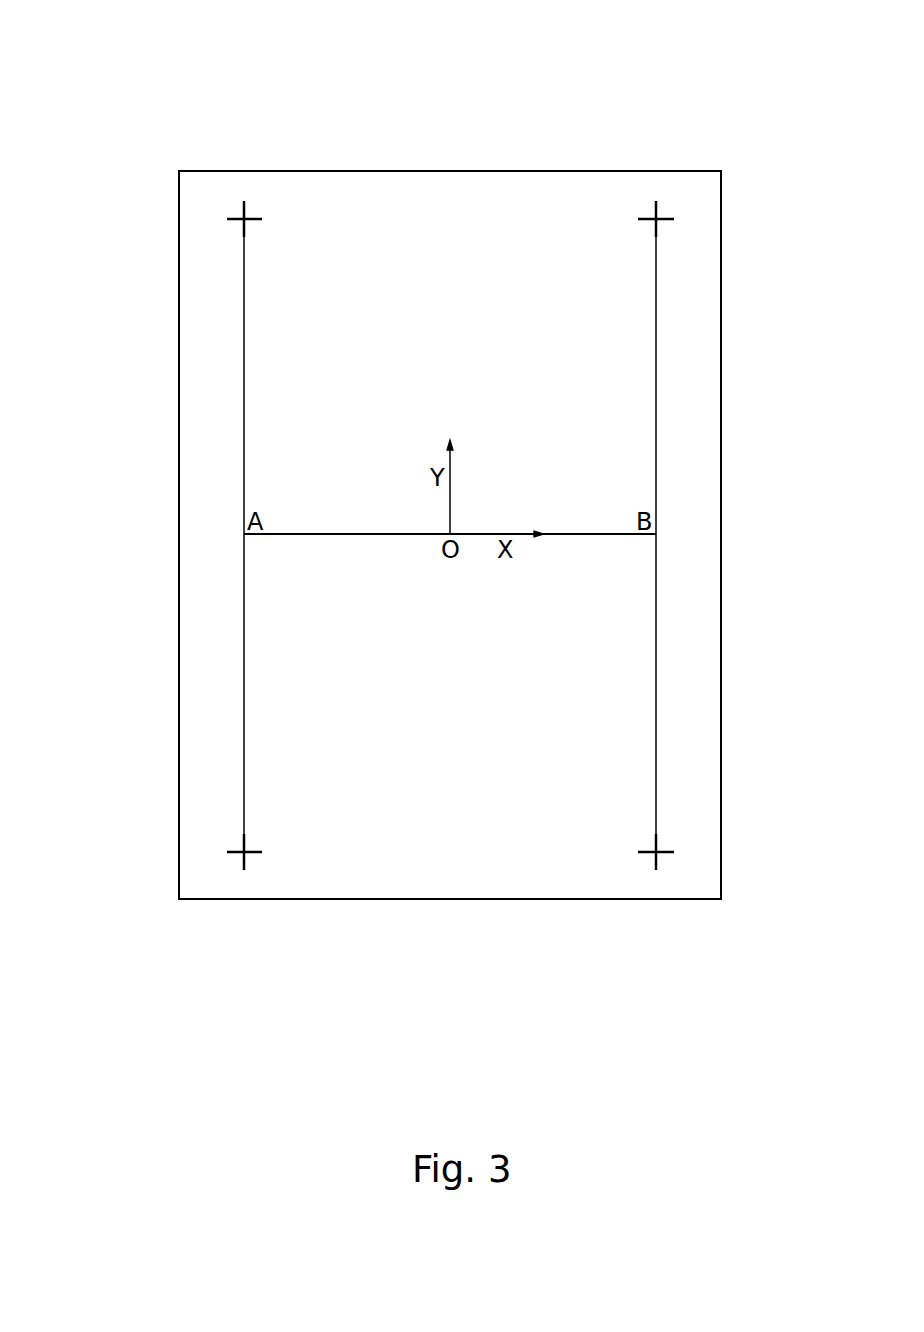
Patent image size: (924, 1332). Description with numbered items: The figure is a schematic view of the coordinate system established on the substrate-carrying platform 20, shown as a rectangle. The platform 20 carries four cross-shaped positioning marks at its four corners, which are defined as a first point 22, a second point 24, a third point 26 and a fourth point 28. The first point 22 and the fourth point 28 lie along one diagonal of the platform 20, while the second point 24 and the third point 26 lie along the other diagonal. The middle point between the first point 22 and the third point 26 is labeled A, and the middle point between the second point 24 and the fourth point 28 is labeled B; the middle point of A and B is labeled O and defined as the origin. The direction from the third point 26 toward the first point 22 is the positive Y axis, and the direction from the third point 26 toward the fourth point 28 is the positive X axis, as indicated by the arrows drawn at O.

The substrate-carrying platform 20 is at (460, 203).
The first point 22 is at (227, 218).
The second point 24 is at (657, 202).
The third point 26 is at (240, 852).
The fourth point 28 is at (655, 863).